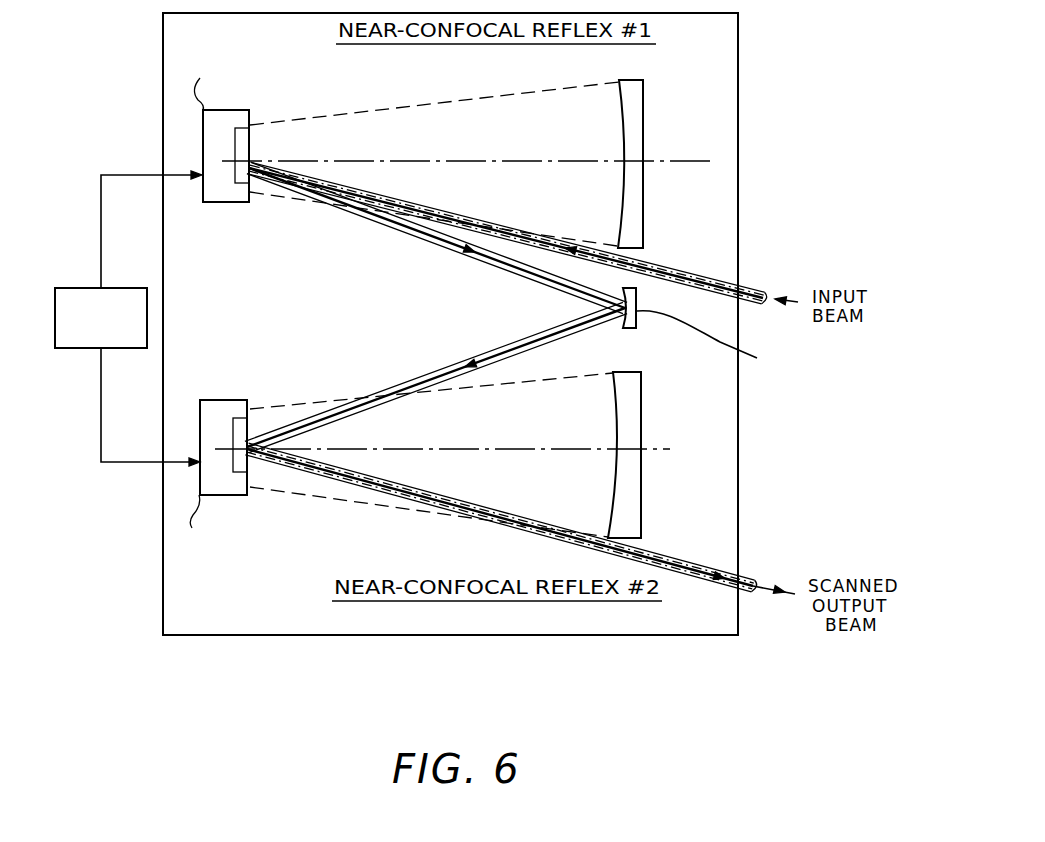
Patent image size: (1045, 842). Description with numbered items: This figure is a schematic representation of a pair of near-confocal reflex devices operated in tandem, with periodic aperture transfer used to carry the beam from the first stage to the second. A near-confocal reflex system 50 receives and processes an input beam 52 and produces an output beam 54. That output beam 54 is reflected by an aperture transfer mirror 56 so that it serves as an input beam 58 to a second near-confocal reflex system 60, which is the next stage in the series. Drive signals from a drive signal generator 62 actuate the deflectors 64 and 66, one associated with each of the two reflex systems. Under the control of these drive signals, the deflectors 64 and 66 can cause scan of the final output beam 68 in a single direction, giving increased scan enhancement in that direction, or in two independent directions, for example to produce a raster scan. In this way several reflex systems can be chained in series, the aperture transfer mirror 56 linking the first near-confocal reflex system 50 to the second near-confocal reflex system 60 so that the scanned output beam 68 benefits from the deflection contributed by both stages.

The near-confocal reflex system 50 is at (551, 145).
The input beam 52 is at (681, 264).
The output beam 54 is at (428, 246).
The aperture transfer mirror 56 is at (632, 323).
The input beam 58 is at (440, 355).
The near-confocal reflex system 60 is at (541, 441).
The drive signal generator 62 is at (128, 287).
The deflector 64 is at (246, 143).
The deflector 66 is at (240, 444).
The output beam 68 is at (683, 558).